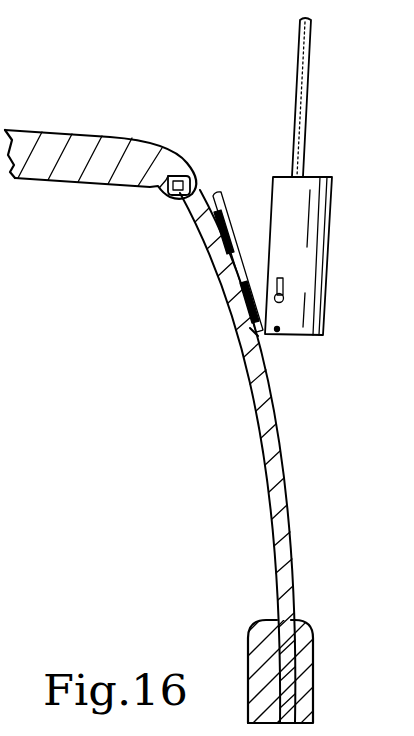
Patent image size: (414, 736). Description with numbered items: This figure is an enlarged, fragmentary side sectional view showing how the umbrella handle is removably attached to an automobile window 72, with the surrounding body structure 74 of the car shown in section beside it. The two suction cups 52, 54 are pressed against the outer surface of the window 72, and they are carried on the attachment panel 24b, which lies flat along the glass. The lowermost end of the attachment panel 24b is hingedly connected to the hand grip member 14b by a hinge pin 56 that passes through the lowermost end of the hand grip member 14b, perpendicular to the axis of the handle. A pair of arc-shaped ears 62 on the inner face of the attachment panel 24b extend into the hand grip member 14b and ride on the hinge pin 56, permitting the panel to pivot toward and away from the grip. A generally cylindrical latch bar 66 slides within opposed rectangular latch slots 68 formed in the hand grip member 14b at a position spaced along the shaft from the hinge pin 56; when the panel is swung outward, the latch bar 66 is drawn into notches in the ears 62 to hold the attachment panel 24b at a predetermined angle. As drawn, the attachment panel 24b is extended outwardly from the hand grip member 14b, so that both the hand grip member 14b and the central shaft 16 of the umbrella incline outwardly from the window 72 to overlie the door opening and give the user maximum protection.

The vehicle body panel 74 is at (68, 147).
The suction cup 52 is at (202, 193).
The window 72 is at (287, 511).
The attachment panel 24b is at (223, 212).
The ears 62 is at (250, 298).
The suction cup 54 is at (252, 333).
The hand grip member 14b is at (316, 182).
The central shaft 16 is at (306, 112).
The latch slots 68 is at (283, 281).
The latch bar 66 is at (283, 296).
The hinge pin 56 is at (278, 331).